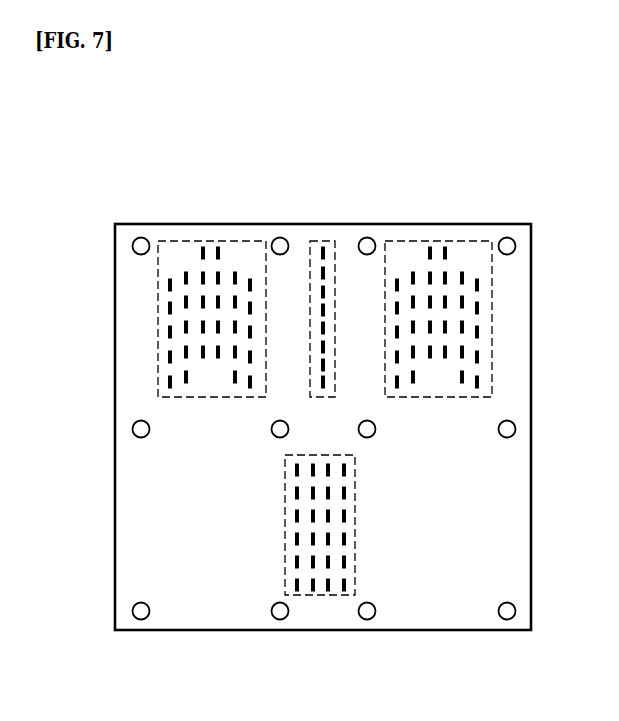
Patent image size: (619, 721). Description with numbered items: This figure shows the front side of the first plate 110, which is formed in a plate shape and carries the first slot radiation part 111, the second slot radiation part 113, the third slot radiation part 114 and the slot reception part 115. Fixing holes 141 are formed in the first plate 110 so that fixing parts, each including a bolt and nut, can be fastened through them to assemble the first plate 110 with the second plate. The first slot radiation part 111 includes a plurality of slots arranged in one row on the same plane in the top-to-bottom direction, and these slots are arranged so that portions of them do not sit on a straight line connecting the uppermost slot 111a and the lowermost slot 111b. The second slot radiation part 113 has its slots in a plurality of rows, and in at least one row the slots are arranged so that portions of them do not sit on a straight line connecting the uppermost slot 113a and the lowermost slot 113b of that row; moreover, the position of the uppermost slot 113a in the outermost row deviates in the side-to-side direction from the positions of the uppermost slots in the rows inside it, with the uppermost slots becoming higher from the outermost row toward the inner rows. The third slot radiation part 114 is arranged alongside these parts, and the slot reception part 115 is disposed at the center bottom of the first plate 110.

The first plate 110 is at (92, 160).
The first slot radiation part 111 is at (319, 241).
The uppermost slot 111a is at (322, 250).
The lowermost slot 111b is at (325, 380).
The second slot radiation part 113 is at (210, 240).
The uppermost slot 113a is at (166, 287).
The lowermost slot 113b is at (170, 382).
The third slot radiation part 114 is at (433, 241).
The slot reception part 115 is at (318, 597).
The fixing hole 141 is at (140, 613).